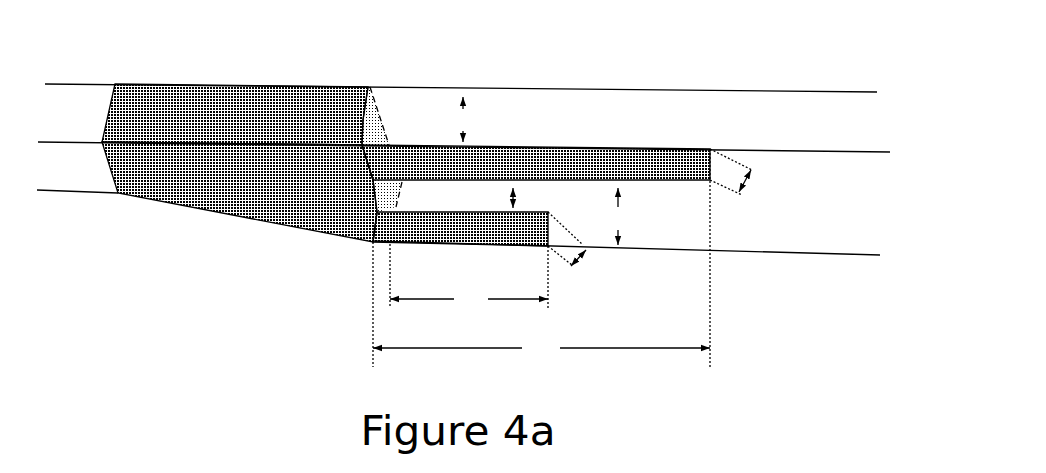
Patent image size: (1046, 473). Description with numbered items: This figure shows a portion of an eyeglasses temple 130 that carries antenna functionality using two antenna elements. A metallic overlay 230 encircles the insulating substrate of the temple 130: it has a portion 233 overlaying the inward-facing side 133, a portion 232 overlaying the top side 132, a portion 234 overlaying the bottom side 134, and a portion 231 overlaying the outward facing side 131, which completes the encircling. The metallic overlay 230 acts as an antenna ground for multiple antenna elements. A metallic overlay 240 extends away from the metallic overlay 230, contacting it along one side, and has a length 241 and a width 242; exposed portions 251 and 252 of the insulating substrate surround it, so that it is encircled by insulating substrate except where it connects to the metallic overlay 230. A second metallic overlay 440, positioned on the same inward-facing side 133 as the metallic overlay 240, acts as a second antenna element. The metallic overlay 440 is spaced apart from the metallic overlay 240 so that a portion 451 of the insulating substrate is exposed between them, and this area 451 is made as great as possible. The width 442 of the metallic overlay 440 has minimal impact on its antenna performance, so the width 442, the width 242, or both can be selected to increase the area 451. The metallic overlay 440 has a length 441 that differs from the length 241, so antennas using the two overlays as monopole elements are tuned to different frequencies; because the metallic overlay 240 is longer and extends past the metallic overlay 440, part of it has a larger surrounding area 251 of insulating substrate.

The temple 130 is at (781, 41).
The outward facing side 131 is at (688, 84).
The top side 132 is at (752, 133).
The inward-facing side 133 is at (837, 211).
The bottom side 134 is at (721, 259).
The metallic overlay 230 is at (406, 188).
The portion overlaying outward facing side 231 is at (364, 121).
The portion overlaying top side 232 is at (172, 128).
The portion overlaying inward-facing side 233 is at (254, 192).
The portion overlaying bottom side 234 is at (388, 197).
The metallic overlay 240 is at (444, 174).
The length 241 is at (541, 258).
The width 242 is at (755, 176).
The exposed portion of insulating substrate 251 is at (616, 216).
The exposed portion of insulating substrate 252 is at (463, 119).
The metallic overlay 440 is at (444, 239).
The length 441 is at (469, 277).
The width 442 is at (584, 251).
The portion of insulating substrate 451 is at (537, 198).